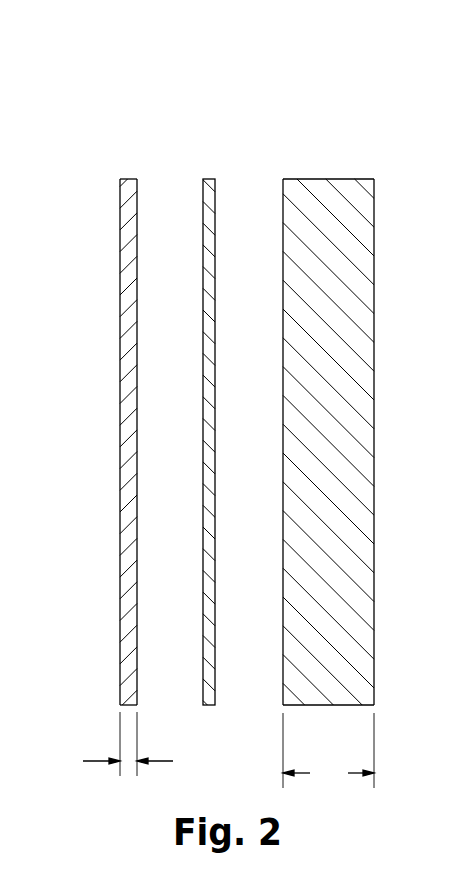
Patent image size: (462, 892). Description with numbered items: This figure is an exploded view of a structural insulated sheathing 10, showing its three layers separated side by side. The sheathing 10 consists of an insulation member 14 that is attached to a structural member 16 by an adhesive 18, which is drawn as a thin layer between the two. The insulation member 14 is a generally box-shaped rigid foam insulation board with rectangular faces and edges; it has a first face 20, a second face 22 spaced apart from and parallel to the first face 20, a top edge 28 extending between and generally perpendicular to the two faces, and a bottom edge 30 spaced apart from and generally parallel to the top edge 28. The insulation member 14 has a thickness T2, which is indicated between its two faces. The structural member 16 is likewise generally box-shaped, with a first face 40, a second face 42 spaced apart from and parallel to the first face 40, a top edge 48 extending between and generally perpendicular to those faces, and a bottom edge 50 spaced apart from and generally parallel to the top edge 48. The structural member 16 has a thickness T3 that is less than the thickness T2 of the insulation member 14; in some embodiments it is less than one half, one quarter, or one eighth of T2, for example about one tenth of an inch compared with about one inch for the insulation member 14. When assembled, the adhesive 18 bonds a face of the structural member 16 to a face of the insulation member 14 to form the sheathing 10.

The structural insulated sheathing 10 is at (121, 110).
The insulation member 14 is at (337, 158).
The structural member 16 is at (149, 161).
The adhesive 18 is at (208, 178).
The first face 20 is at (283, 205).
The second face 22 is at (374, 207).
The top edge 28 is at (349, 178).
The bottom edge 30 is at (345, 706).
The first face 40 is at (120, 210).
The second face 42 is at (137, 213).
The top edge 48 is at (128, 178).
The bottom edge 50 is at (127, 708).
The thickness of the insulation member T2 is at (328, 750).
The thickness of the structural member T3 is at (109, 744).